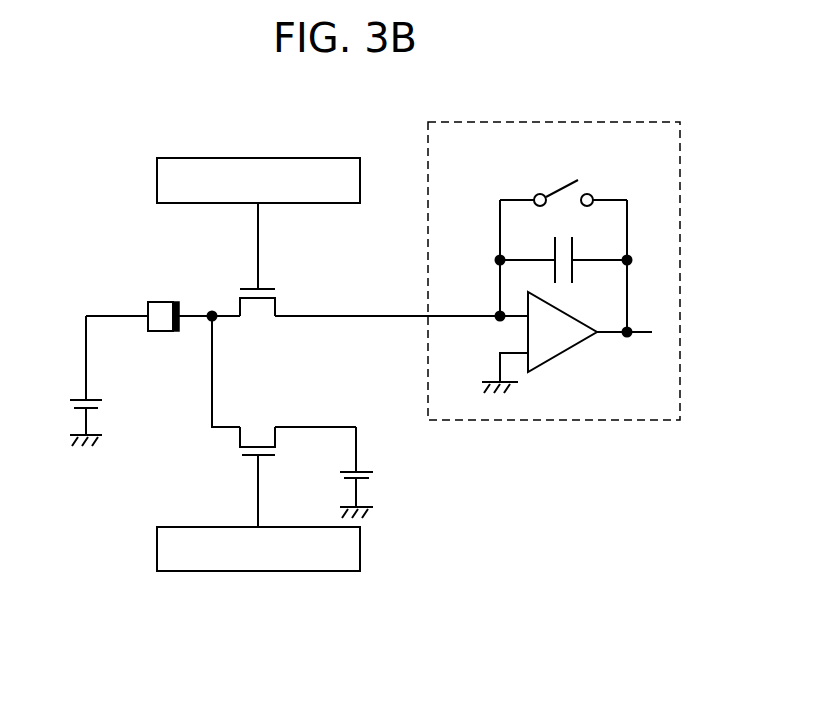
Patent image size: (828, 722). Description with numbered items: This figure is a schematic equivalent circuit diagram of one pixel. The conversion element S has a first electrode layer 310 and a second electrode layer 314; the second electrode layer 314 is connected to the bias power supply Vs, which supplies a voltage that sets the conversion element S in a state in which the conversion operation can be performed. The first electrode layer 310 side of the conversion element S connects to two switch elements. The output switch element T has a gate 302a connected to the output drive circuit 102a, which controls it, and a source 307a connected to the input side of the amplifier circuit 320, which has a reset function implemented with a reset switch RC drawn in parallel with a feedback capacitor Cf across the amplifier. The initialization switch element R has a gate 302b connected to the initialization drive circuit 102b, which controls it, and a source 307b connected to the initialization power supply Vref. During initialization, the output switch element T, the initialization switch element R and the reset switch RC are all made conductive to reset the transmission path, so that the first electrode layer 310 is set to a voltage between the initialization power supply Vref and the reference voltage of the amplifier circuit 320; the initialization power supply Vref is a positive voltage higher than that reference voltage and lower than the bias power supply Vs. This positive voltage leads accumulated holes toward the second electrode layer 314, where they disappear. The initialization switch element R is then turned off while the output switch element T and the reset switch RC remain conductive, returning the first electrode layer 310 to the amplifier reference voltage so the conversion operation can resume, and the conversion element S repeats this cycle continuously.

The output drive circuit 102a is at (260, 158).
The initialization drive circuit 102b is at (258, 571).
The gate of output switch element 302a is at (258, 289).
The gate of initialization switch element 302b is at (247, 457).
The source of output switch element 307a is at (277, 317).
The source of initialization switch element 307b is at (285, 427).
The first electrode layer 310 is at (177, 302).
The second electrode layer 314 is at (153, 332).
The amplifier circuit 320 is at (567, 350).
The conversion element S is at (123, 315).
The output switch element T is at (291, 294).
The initialization switch element R is at (226, 442).
The bias power supply Vs is at (68, 416).
The initialization power supply Vref is at (380, 489).
The reset switch RC is at (563, 175).
The feedback capacitor Cf is at (564, 246).